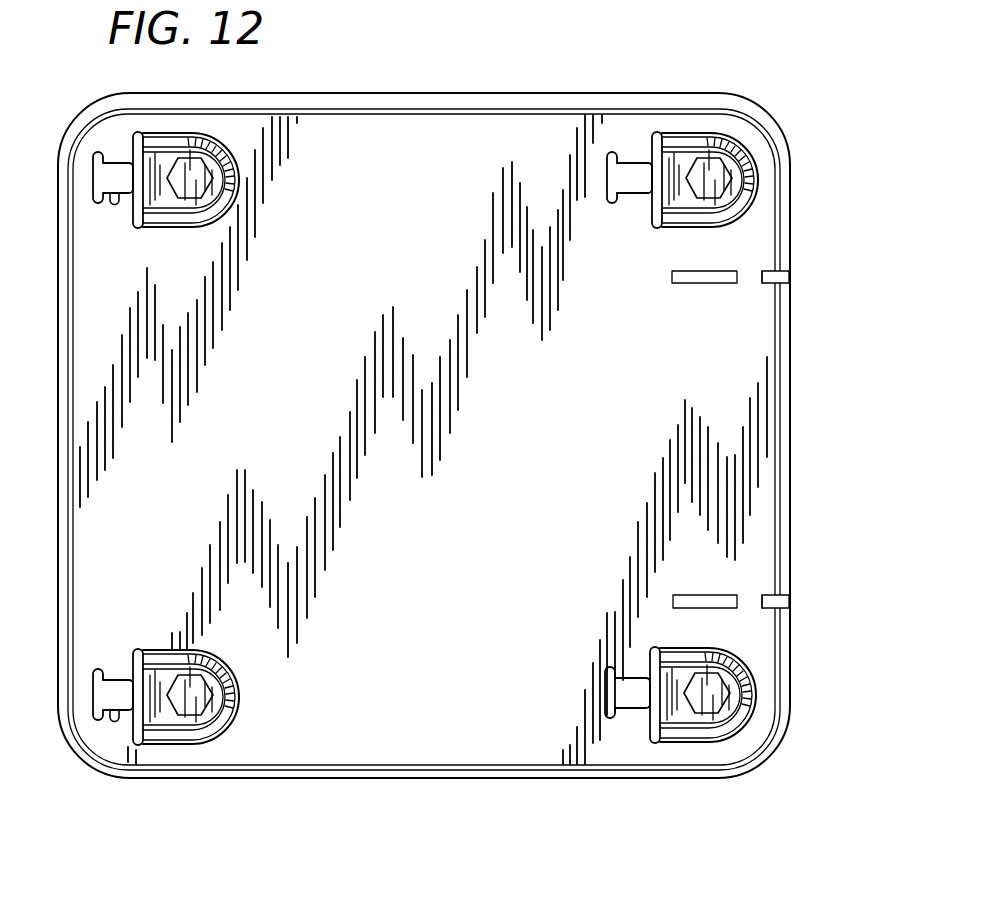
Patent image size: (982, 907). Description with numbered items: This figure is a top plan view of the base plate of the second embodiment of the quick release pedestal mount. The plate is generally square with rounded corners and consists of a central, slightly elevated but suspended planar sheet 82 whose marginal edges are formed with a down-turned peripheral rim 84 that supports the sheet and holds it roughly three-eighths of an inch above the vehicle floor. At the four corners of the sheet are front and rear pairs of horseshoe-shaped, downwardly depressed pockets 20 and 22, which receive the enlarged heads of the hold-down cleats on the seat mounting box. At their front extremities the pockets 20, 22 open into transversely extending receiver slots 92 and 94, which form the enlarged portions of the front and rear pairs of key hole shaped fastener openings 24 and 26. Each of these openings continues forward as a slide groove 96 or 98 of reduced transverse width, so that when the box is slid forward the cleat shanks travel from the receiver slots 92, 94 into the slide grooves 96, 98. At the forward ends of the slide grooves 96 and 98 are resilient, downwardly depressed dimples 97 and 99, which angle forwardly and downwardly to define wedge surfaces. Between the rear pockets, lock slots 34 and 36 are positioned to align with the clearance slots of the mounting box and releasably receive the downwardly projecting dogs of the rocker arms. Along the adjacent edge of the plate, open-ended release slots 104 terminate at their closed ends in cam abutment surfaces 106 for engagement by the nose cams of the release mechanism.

The pocket 20 is at (222, 195).
The pocket 22 is at (723, 193).
The key hole shaped fastener opening 24 is at (99, 440).
The key hole shaped fastener opening 26 is at (595, 427).
The lock slot 34 is at (686, 596).
The lock slot 36 is at (697, 284).
The planar sheet 82 is at (427, 584).
The peripheral rim 84 is at (333, 778).
The receiver slot 92 is at (142, 133).
The receiver slot 94 is at (659, 135).
The slide groove 96 is at (114, 202).
The dimple 97 is at (100, 150).
The slide groove 98 is at (634, 167).
The dimple 99 is at (614, 200).
The release slot 104 is at (788, 430).
The cam abutment surface 106 is at (767, 287).